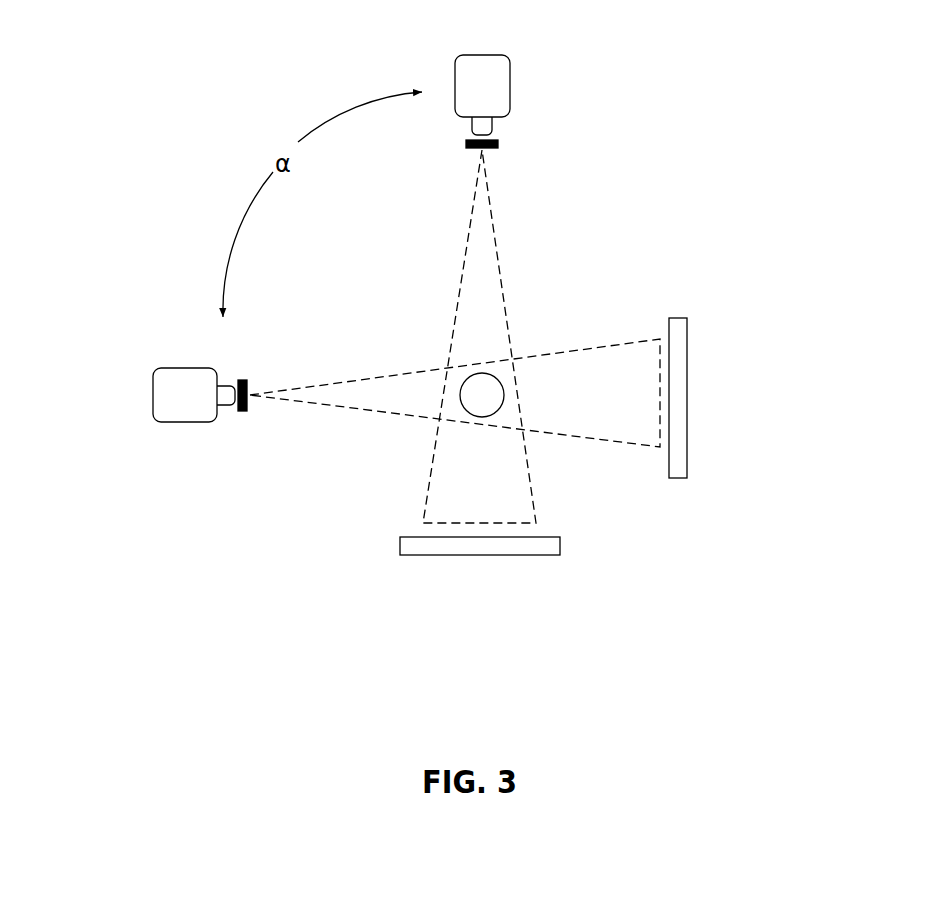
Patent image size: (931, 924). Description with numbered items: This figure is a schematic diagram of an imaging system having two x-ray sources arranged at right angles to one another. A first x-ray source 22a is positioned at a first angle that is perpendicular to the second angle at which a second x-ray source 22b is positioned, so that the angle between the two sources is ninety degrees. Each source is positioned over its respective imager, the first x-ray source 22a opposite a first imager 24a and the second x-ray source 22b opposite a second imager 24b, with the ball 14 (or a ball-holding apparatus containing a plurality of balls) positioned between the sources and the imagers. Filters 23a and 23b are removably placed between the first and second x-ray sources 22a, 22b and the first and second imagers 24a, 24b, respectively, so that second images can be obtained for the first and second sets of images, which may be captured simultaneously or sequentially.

The ball 14 is at (452, 396).
The first x-ray source 22a is at (524, 88).
The second x-ray source 22b is at (138, 380).
The filter 23a is at (510, 142).
The filter 23b is at (253, 374).
The first imager 24a is at (456, 559).
The second imager 24b is at (706, 405).